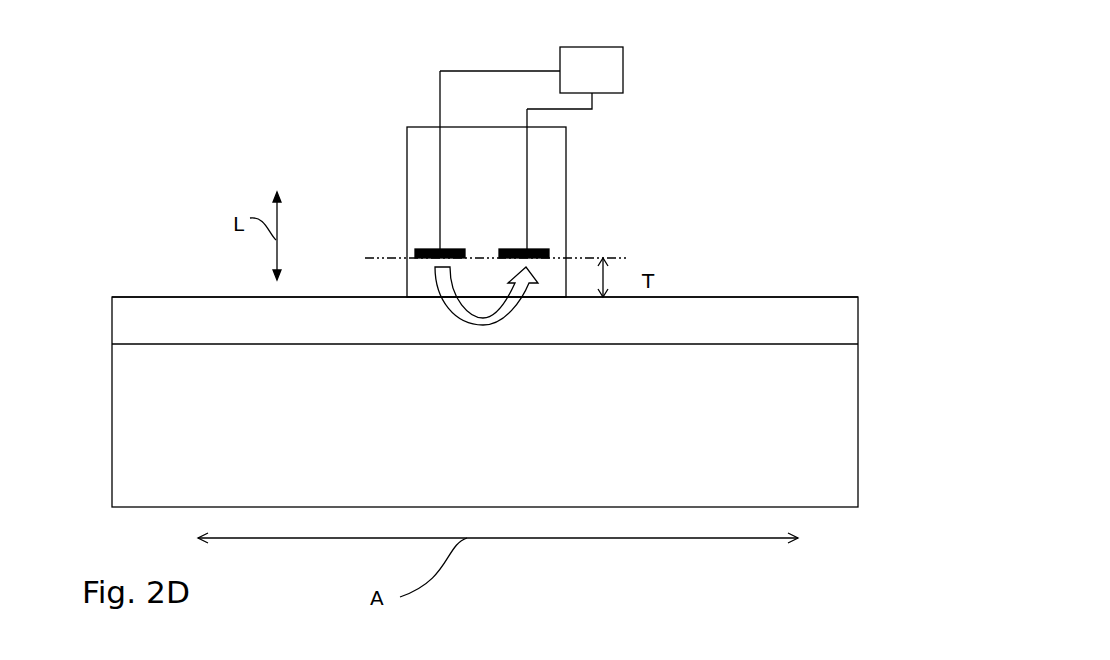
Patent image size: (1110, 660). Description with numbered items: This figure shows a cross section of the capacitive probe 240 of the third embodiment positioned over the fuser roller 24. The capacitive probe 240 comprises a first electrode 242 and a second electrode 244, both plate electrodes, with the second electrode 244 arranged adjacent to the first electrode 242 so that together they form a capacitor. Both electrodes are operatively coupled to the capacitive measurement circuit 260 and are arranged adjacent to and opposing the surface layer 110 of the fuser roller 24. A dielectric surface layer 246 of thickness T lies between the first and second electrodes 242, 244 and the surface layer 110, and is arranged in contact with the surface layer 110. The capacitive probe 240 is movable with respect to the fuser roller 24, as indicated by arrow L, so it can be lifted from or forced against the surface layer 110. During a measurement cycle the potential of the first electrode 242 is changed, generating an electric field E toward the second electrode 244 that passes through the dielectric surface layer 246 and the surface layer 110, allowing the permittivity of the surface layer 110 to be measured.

The fuser roller 24 is at (493, 482).
The surface layer 110 is at (168, 306).
The capacitive probe 240 is at (407, 190).
The first electrode 242 is at (415, 249).
The second electrode 244 is at (540, 250).
The dielectric surface layer 246 is at (407, 276).
The capacitive measurement circuit 260 is at (625, 70).